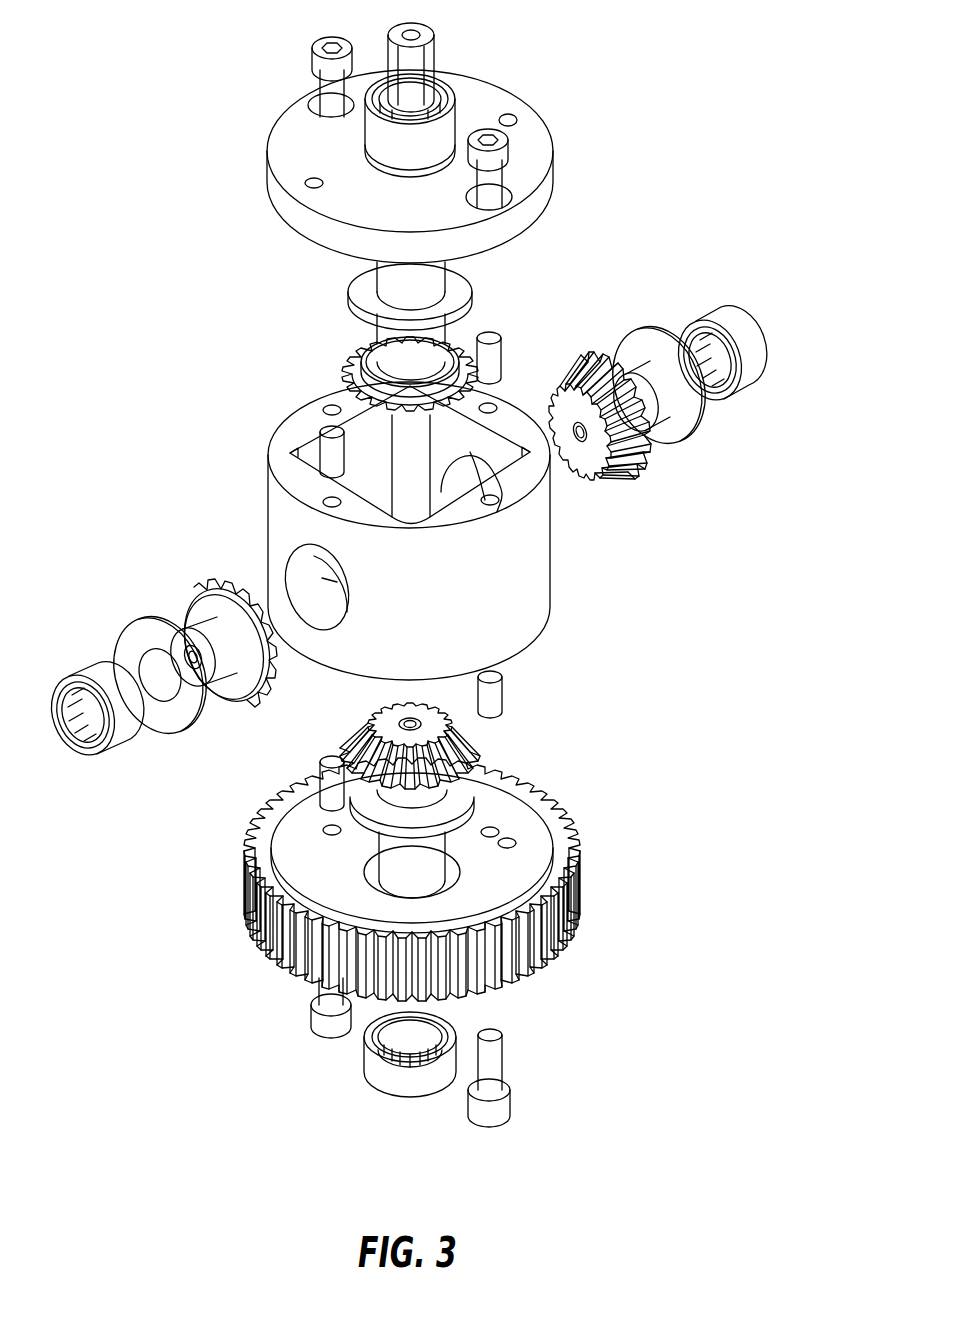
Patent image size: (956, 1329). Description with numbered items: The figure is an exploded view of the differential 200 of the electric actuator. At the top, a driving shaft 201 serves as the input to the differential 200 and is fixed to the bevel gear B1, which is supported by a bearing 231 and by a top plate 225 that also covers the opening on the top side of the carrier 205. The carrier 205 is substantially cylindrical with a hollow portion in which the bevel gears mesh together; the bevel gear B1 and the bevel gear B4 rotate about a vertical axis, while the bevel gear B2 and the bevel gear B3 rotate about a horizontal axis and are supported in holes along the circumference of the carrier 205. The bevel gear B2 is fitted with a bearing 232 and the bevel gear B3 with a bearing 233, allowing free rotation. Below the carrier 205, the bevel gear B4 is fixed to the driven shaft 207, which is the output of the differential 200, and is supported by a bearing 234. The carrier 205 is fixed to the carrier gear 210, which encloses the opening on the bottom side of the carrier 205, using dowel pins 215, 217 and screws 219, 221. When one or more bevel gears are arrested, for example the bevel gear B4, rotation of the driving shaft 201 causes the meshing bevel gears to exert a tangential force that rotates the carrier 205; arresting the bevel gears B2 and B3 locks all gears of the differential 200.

The differential 200 is at (404, 565).
The driving shaft 201 is at (422, 58).
The bearing 231 is at (452, 114).
The top plate 225 is at (268, 190).
The bevel gear B1 is at (345, 356).
The bevel gear B2 is at (578, 378).
The bearing 232 is at (726, 398).
The carrier 205 is at (546, 562).
The dowel pin 215 is at (497, 683).
The bevel gear B3 is at (205, 578).
The bearing 233 is at (92, 762).
The dowel pin 217 is at (324, 758).
The bevel gear B4 is at (480, 742).
The driven shaft 207 is at (432, 876).
The carrier gear 210 is at (576, 883).
The screw 219 is at (322, 1015).
The bearing 234 is at (368, 1075).
The screw 221 is at (505, 1075).